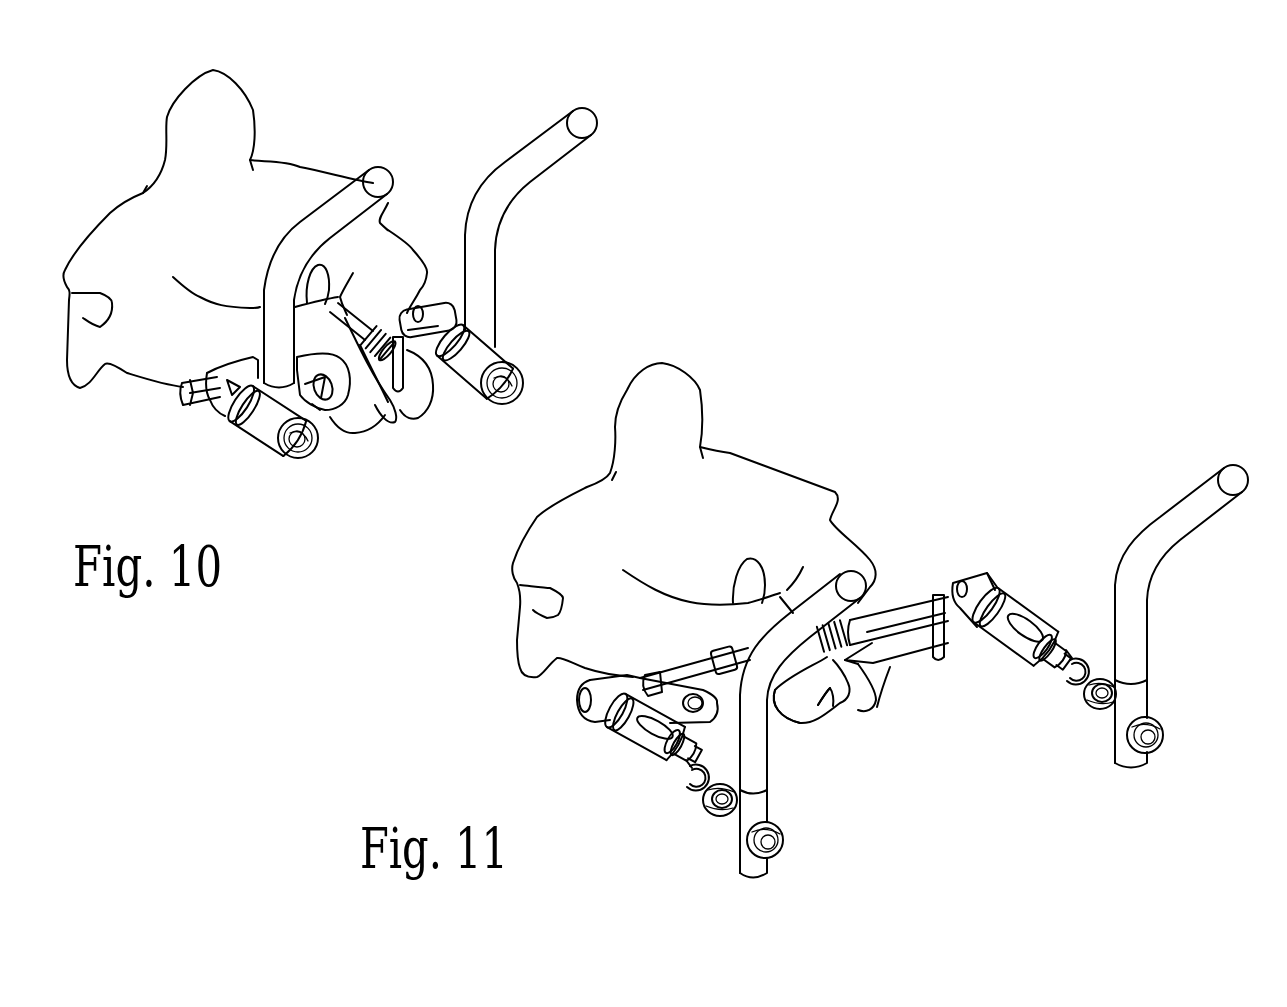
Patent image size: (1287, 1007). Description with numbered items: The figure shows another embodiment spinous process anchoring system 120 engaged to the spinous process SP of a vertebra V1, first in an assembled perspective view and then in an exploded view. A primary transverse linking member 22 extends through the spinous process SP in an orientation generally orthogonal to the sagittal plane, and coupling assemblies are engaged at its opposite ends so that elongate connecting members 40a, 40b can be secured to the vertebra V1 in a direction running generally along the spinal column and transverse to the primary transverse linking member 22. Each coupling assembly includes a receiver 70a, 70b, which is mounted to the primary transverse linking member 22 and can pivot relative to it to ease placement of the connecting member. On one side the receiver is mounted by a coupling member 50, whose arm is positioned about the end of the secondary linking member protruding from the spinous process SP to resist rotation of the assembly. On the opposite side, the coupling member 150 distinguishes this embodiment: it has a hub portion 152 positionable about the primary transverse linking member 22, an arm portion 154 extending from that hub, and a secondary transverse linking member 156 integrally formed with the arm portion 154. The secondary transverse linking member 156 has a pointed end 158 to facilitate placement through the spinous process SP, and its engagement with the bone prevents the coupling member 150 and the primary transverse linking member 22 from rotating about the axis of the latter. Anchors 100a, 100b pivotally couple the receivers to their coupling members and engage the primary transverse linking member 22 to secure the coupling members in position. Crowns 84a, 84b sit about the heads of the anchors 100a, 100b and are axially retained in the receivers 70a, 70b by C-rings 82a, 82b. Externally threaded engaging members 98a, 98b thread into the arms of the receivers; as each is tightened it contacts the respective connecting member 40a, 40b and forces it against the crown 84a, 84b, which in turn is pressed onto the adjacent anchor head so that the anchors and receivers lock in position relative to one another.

In FIG. 10, the vertebra V1 is at (183, 141).
In FIG. 11, the vertebra V1 is at (597, 493).
In FIG. 10, the primary transverse linking member 22 is at (175, 397).
In FIG. 11, the primary transverse linking member 22 is at (892, 598).
In FIG. 10, the elongate connecting member 40a is at (377, 163).
In FIG. 11, the elongate connecting member 40a is at (779, 810).
In FIG. 10, the elongate connecting member 40b is at (558, 168).
In FIG. 11, the elongate connecting member 40b is at (1175, 550).
In FIG. 10, the coupling member 50 is at (215, 411).
In FIG. 11, the coupling member 50 is at (571, 703).
In FIG. 10, the receiver 70a is at (251, 442).
In FIG. 11, the receiver 70a is at (615, 757).
In FIG. 10, the receiver 70b is at (498, 347).
In FIG. 11, the receiver 70b is at (1020, 588).
In FIG. 11, the C-ring 82a is at (679, 798).
In FIG. 11, the C-ring 82b is at (1058, 690).
In FIG. 11, the crown 84a is at (702, 821).
In FIG. 11, the crown 84b is at (1078, 707).
In FIG. 10, the engaging member 98a is at (301, 459).
In FIG. 11, the engaging member 98a is at (776, 857).
In FIG. 10, the engaging member 98b is at (510, 386).
In FIG. 11, the engaging member 98b is at (1167, 723).
In FIG. 11, the anchor 100a is at (658, 778).
In FIG. 11, the anchor 100b is at (1103, 573).
In FIG. 11, the spinous process anchoring system 120 is at (993, 478).
In FIG. 10, the coupling member 150 is at (439, 298).
In FIG. 11, the coupling member 150 is at (990, 568).
In FIG. 10, the hub portion 152 is at (473, 303).
In FIG. 11, the hub portion 152 is at (973, 575).
In FIG. 10, the arm portion 154 is at (402, 377).
In FIG. 11, the arm portion 154 is at (937, 657).
In FIG. 11, the secondary transverse linking member 156 is at (860, 660).
In FIG. 10, the pointed end 158 is at (313, 408).
In FIG. 11, the pointed end 158 is at (846, 667).
In FIG. 10, the spinous process SP is at (388, 407).
In FIG. 11, the spinous process SP is at (808, 708).